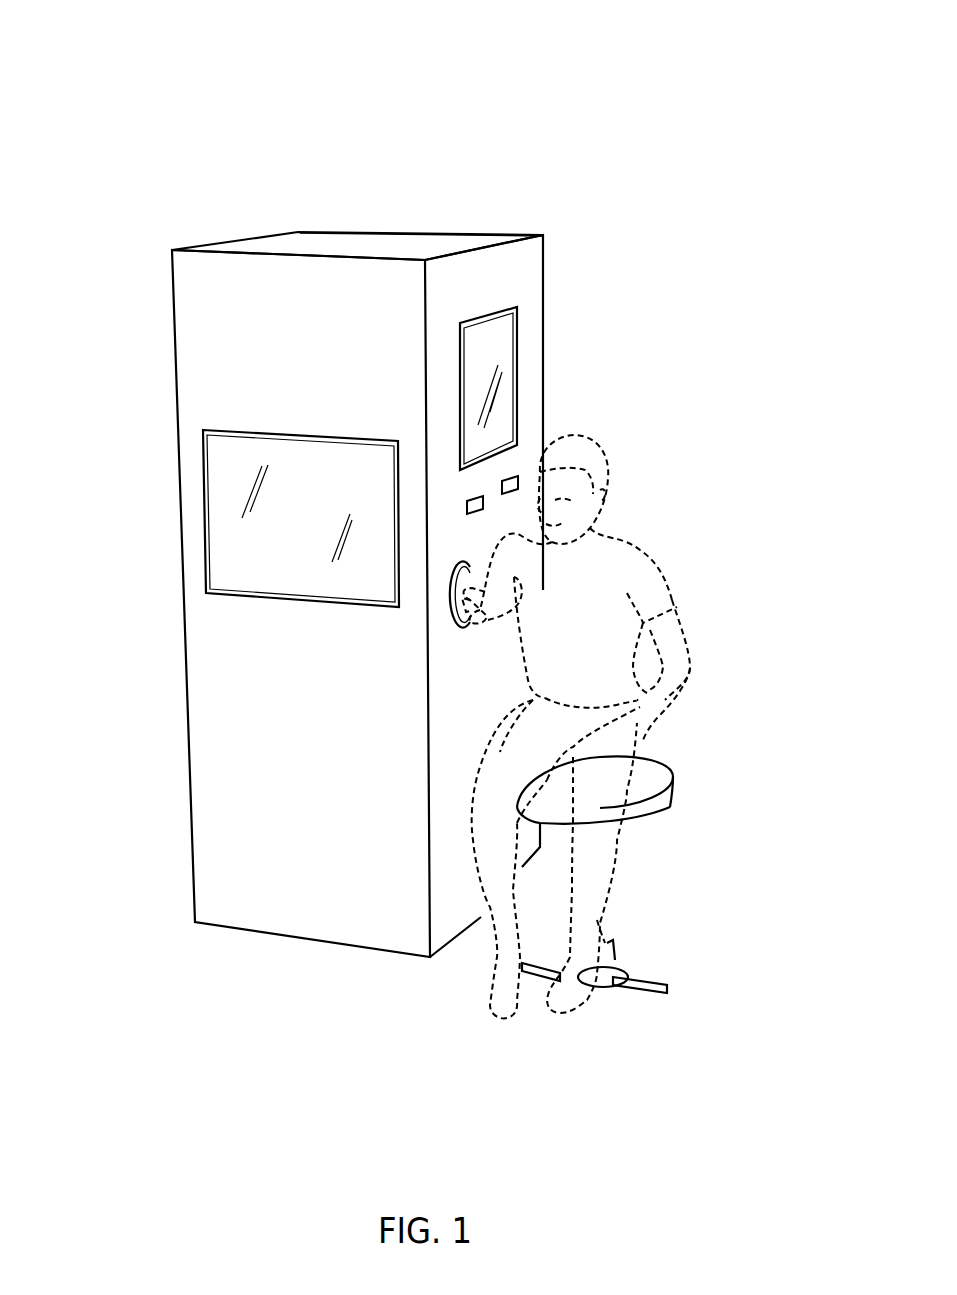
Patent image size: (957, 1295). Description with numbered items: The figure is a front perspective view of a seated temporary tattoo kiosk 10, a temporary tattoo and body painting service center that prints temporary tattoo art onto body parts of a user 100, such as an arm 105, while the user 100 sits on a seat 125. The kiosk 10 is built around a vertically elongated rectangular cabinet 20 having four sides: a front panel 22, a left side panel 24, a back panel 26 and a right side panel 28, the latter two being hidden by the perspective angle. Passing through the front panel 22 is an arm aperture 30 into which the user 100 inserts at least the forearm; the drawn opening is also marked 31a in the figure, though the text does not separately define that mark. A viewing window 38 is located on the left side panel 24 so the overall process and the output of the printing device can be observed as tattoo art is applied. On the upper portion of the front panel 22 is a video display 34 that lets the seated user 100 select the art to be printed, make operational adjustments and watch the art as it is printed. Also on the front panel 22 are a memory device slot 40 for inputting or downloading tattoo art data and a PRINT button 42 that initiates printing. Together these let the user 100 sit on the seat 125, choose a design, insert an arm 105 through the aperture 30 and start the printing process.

The seated temporary tattoo kiosk 10 is at (122, 180).
The cabinet 20 is at (527, 236).
The front panel 22 is at (520, 288).
The left side panel 24 is at (213, 318).
The back panel 26 is at (244, 236).
The right side panel 28 is at (372, 223).
The video display 34 is at (455, 382).
The viewing window 38 is at (207, 482).
The memory device slot 40 is at (518, 474).
The PRINT button 42 is at (465, 505).
The arm aperture 30 is at (457, 628).
The sensor opening 31a is at (460, 595).
The user 100 is at (605, 460).
The arm 105 is at (476, 613).
The seat 125 is at (667, 987).